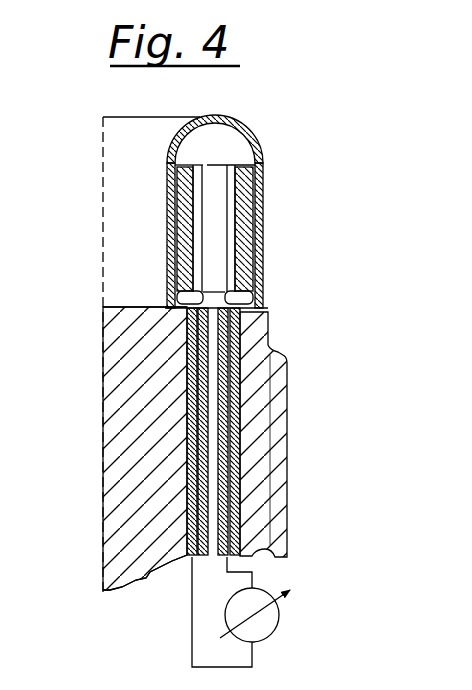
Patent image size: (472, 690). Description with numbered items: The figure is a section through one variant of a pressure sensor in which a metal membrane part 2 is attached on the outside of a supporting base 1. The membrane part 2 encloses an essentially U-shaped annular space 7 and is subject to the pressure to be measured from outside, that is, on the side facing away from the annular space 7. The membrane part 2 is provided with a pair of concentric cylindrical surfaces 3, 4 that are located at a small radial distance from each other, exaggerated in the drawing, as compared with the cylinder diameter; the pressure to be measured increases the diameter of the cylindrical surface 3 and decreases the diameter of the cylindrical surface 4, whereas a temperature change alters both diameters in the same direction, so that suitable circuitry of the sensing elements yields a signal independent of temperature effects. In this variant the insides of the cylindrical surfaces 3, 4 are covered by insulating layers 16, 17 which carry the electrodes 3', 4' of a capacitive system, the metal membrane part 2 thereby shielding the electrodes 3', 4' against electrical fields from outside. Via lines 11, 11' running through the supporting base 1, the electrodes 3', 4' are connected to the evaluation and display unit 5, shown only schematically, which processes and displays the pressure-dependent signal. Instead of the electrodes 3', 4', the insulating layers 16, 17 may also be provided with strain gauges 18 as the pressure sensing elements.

The supporting base 1 is at (128, 378).
The membrane part 2 is at (260, 120).
The cylindrical surface 3 is at (145, 235).
The cylindrical surface 4 is at (284, 235).
The electrode 3' is at (127, 213).
The electrode 4' is at (279, 242).
The strain gauges 18 is at (195, 226).
The evaluation and display unit 5 is at (272, 620).
The annular space 7 is at (215, 193).
The line 11 is at (126, 431).
The line 11' is at (290, 431).
The insulating layer 16 is at (242, 248).
The insulating layer 17 is at (185, 258).